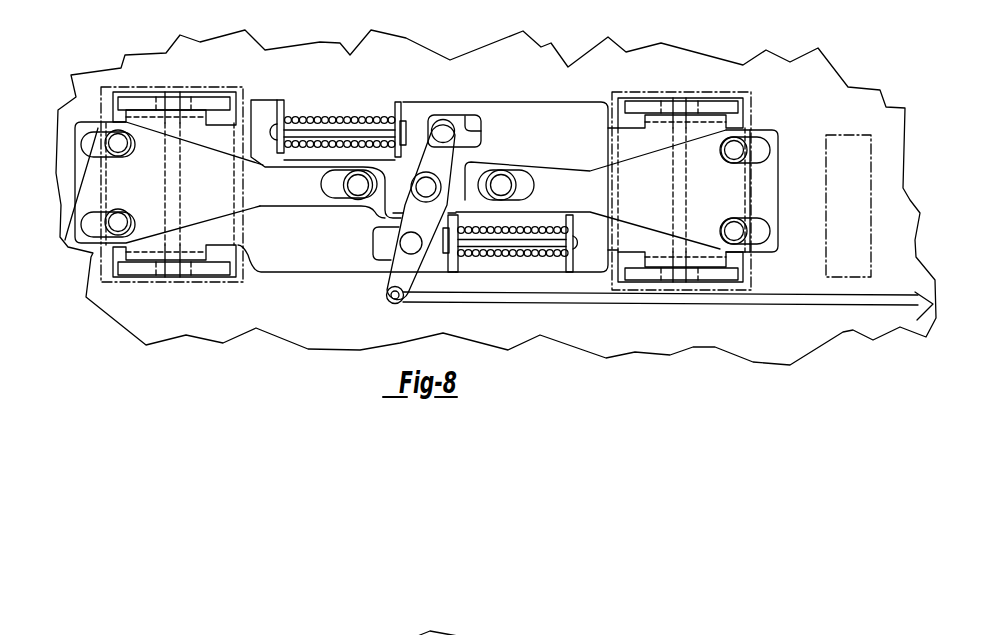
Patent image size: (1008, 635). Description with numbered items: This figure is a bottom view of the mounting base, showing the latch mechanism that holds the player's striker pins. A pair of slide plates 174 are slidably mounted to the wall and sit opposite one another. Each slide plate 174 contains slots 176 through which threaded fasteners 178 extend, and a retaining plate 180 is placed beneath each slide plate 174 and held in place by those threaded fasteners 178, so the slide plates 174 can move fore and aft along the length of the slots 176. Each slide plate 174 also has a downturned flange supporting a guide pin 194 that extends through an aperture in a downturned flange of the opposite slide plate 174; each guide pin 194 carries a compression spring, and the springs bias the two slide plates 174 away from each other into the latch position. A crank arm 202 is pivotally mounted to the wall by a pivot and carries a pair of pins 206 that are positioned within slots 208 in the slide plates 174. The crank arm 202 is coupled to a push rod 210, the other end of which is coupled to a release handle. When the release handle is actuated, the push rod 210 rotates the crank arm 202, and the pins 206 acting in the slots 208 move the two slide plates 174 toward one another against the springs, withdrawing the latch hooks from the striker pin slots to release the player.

The slide plate 174 is at (518, 102).
The slot 176 is at (767, 147).
The threaded fastener 178 is at (118, 144).
The retaining plate 180 is at (203, 225).
The guide pin 194 is at (331, 128).
The crank arm 202 is at (388, 277).
The pin 206 is at (440, 120).
The slot 208 is at (478, 132).
The push rod 210 is at (860, 300).